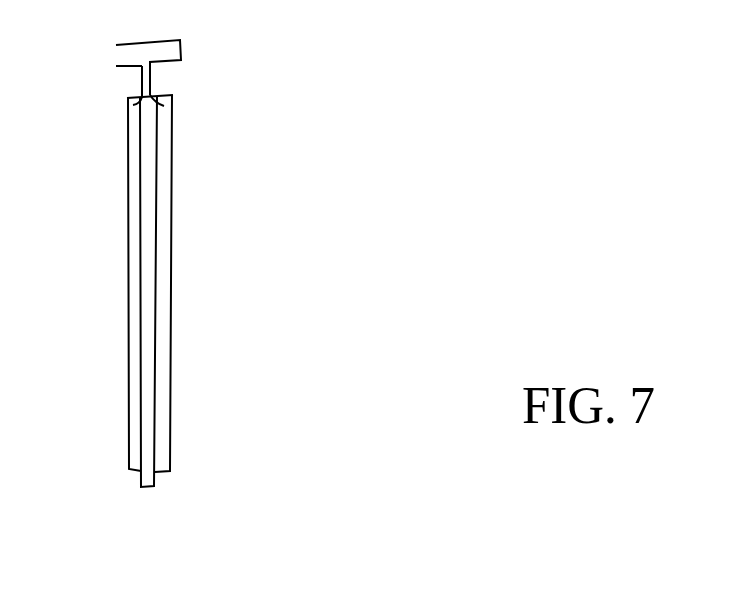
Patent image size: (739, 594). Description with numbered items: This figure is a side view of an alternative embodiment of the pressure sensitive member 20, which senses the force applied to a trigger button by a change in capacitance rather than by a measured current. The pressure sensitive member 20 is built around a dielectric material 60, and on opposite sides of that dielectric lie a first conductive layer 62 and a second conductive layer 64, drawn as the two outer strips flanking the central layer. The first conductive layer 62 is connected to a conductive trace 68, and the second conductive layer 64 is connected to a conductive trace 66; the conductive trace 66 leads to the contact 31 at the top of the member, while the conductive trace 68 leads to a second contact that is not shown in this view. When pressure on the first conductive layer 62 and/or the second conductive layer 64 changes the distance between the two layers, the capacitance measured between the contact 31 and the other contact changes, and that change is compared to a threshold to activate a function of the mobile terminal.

The pressure sensitive member 20 is at (272, 182).
The contact 31 is at (150, 39).
The central shaft 60 is at (157, 314).
The first conductive layer 62 is at (136, 411).
The second conductive layer 64 is at (170, 405).
The conductive trace 66 is at (170, 98).
The conductive trace 68 is at (139, 107).